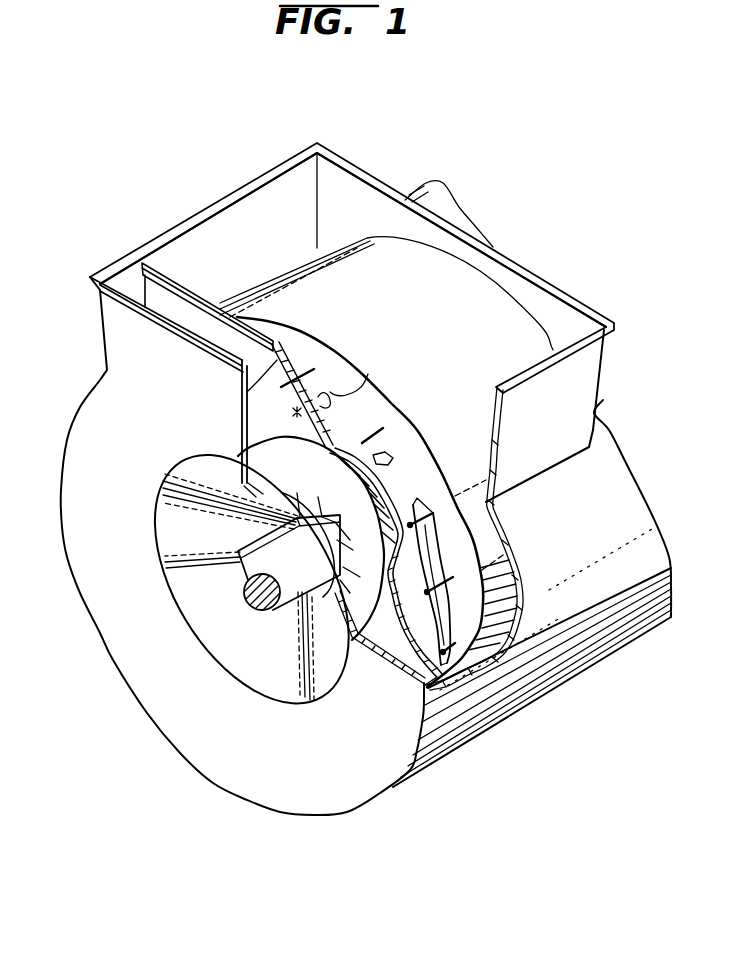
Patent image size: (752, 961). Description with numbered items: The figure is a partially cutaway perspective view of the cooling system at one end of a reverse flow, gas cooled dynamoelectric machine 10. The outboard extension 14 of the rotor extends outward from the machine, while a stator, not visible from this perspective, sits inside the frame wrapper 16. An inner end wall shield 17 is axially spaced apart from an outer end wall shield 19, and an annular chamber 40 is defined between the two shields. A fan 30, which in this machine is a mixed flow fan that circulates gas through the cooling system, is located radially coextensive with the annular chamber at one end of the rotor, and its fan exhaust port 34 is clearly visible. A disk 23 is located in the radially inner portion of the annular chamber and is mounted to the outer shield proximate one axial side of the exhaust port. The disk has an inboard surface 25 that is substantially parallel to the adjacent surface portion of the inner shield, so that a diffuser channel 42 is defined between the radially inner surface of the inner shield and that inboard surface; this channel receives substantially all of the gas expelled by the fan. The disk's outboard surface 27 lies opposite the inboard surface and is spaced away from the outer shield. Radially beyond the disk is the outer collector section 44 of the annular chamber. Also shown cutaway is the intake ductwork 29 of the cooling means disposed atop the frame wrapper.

The dynamoelectric machine 10 is at (78, 340).
The outboard extension 14 is at (291, 555).
The frame wrapper 16 is at (623, 481).
The inner end wall shield 17 is at (380, 408).
The outer end wall shield 19 is at (244, 392).
The disk 23 is at (297, 412).
The inboard surface 25 is at (313, 393).
The outboard surface 27 is at (303, 430).
The intake ductwork 29 is at (226, 192).
The fan 30 is at (400, 497).
The fan exhaust port 34 is at (380, 492).
The annular chamber 40 is at (350, 390).
The diffuser channel 42 is at (357, 433).
The outer collector section 44 is at (317, 363).